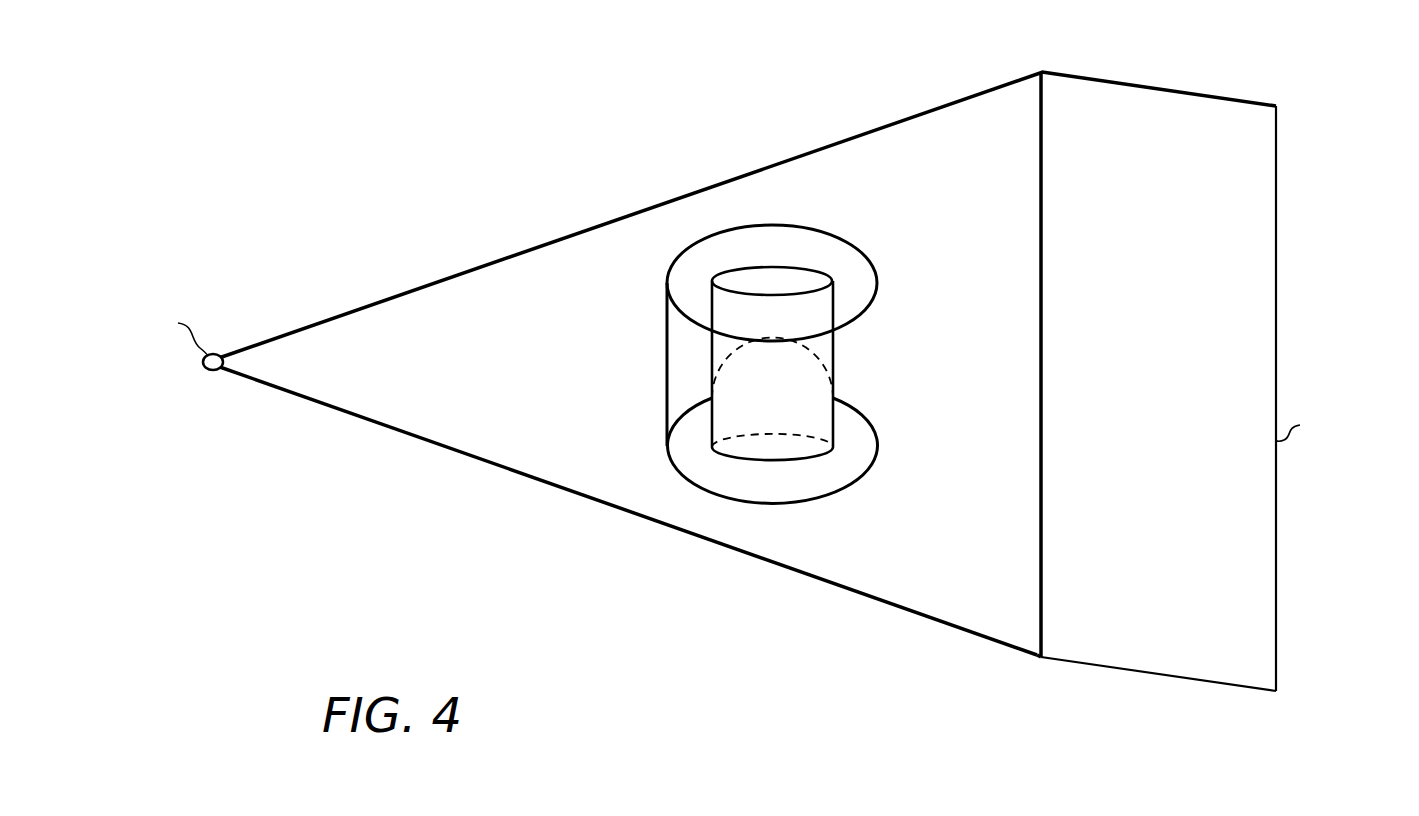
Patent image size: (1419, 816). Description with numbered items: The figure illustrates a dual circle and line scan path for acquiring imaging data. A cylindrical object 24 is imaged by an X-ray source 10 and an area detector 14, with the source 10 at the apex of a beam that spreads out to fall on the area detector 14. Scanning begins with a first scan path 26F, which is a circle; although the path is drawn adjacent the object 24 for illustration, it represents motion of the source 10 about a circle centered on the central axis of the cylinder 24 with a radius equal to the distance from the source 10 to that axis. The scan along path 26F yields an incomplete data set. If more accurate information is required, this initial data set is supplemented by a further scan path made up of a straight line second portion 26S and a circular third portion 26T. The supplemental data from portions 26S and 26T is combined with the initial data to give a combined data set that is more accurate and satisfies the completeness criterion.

The source 10 is at (208, 370).
The area detector 14 is at (1182, 91).
The object 24 is at (772, 266).
The circular third portion 26T is at (855, 243).
The straight line second portion 26S is at (667, 367).
The first scan path 26F is at (863, 478).